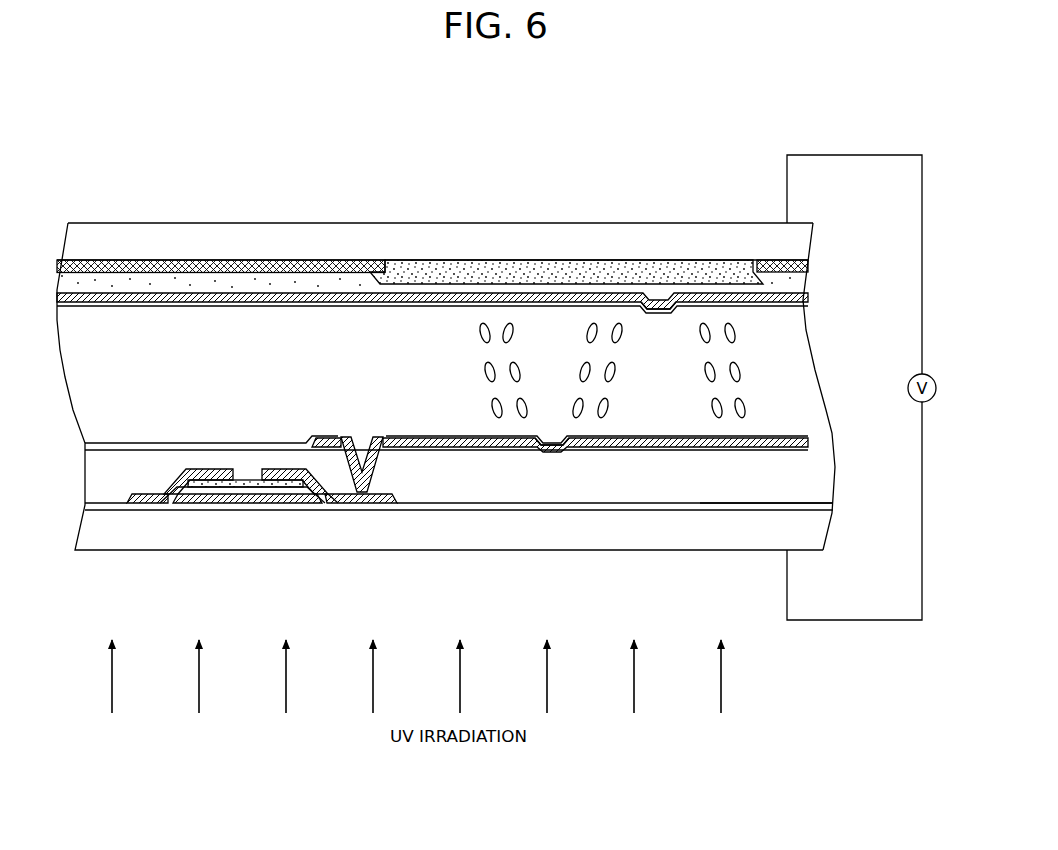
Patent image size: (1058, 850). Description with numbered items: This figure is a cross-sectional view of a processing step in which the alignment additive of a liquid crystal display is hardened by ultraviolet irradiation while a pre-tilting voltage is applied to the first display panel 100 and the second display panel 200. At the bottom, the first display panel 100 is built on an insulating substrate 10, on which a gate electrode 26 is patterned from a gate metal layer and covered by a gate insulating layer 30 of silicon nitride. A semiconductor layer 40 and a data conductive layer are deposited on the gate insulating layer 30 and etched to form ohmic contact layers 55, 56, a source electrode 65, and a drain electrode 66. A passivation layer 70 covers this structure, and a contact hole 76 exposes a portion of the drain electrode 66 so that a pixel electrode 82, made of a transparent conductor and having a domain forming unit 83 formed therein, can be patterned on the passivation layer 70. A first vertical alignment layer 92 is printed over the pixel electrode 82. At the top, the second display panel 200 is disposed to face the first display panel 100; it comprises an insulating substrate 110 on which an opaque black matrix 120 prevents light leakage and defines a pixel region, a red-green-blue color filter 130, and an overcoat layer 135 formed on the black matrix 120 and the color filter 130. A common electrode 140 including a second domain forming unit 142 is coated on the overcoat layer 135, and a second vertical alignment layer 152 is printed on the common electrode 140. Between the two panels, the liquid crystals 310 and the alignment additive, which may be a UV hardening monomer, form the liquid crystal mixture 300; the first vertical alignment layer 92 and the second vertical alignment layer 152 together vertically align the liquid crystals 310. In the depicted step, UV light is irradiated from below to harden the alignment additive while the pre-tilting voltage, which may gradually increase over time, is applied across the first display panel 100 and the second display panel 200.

The insulating substrate 10 is at (373, 543).
The gate electrode 26 is at (272, 507).
The gate insulating layer 30 is at (510, 507).
The semiconductor layer 40 is at (225, 488).
The ohmic contact layer 55 is at (193, 483).
The ohmic contact layer 56 is at (296, 483).
The source electrode 65 is at (157, 503).
The drain electrode 66 is at (330, 503).
The passivation layer 70 is at (103, 493).
The contact hole 76 is at (363, 434).
The pixel electrode 82 is at (427, 452).
The domain forming unit 83 is at (557, 453).
The first vertical alignment layer 92 is at (755, 453).
The first display panel 100 is at (840, 437).
The insulating substrate 110 is at (380, 232).
The black matrix 120 is at (283, 268).
The color filter 130 is at (478, 268).
The overcoat layer 135 is at (205, 278).
The common electrode 140 is at (562, 300).
The second domain forming unit 142 is at (653, 286).
The second vertical alignment layer 152 is at (740, 302).
The second display panel 200 is at (840, 223).
The liquid crystal mixture 300 is at (840, 308).
The liquid crystals 310 is at (588, 333).